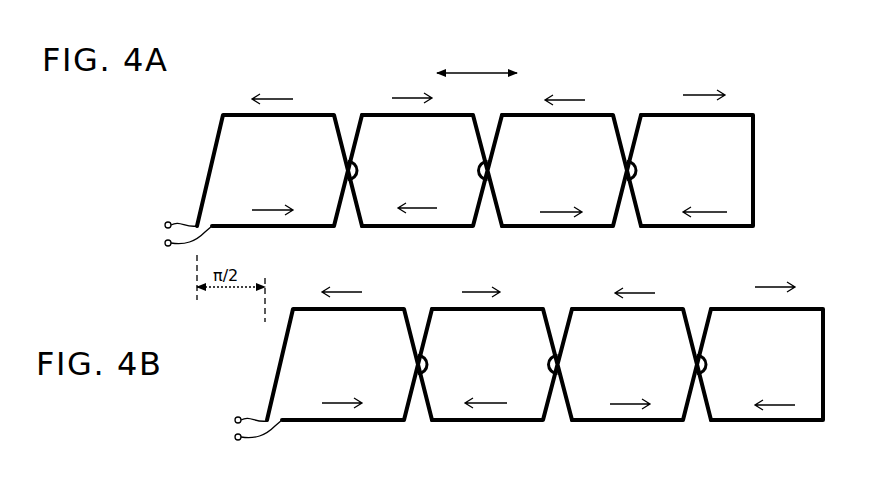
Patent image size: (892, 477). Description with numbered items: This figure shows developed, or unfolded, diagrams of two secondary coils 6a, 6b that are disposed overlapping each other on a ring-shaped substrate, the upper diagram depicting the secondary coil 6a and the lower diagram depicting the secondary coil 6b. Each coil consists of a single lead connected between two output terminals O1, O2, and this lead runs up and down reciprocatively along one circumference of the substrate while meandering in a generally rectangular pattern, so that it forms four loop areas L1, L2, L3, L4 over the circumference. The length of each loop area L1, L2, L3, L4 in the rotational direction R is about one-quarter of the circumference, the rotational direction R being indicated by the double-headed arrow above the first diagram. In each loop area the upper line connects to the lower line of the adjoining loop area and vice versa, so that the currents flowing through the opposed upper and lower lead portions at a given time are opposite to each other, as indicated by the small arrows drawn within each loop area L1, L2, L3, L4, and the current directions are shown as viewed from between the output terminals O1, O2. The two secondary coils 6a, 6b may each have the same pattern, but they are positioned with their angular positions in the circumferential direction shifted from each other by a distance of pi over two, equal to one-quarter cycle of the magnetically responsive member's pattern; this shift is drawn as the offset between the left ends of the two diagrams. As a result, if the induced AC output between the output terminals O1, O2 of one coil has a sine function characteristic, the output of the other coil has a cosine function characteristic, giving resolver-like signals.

In FIG. 4A, the secondary coil 6a is at (220, 134).
In FIG. 4B, the secondary coil 6b is at (287, 330).
In FIG. 4A, the loop area L1 is at (308, 136).
In FIG. 4B, the loop area L1 is at (380, 330).
In FIG. 4A, the loop area L2 is at (399, 136).
In FIG. 4B, the loop area L2 is at (468, 329).
In FIG. 4A, the loop area L3 is at (529, 134).
In FIG. 4B, the loop area L3 is at (601, 329).
In FIG. 4A, the loop area L4 is at (661, 132).
In FIG. 4B, the loop area L4 is at (729, 326).
In FIG. 4A, the output terminal O1 is at (174, 242).
In FIG. 4B, the output terminal O1 is at (243, 436).
In FIG. 4A, the output terminal O2 is at (167, 225).
In FIG. 4B, the output terminal O2 is at (236, 420).
In FIG. 4A, the rotational direction R is at (477, 62).